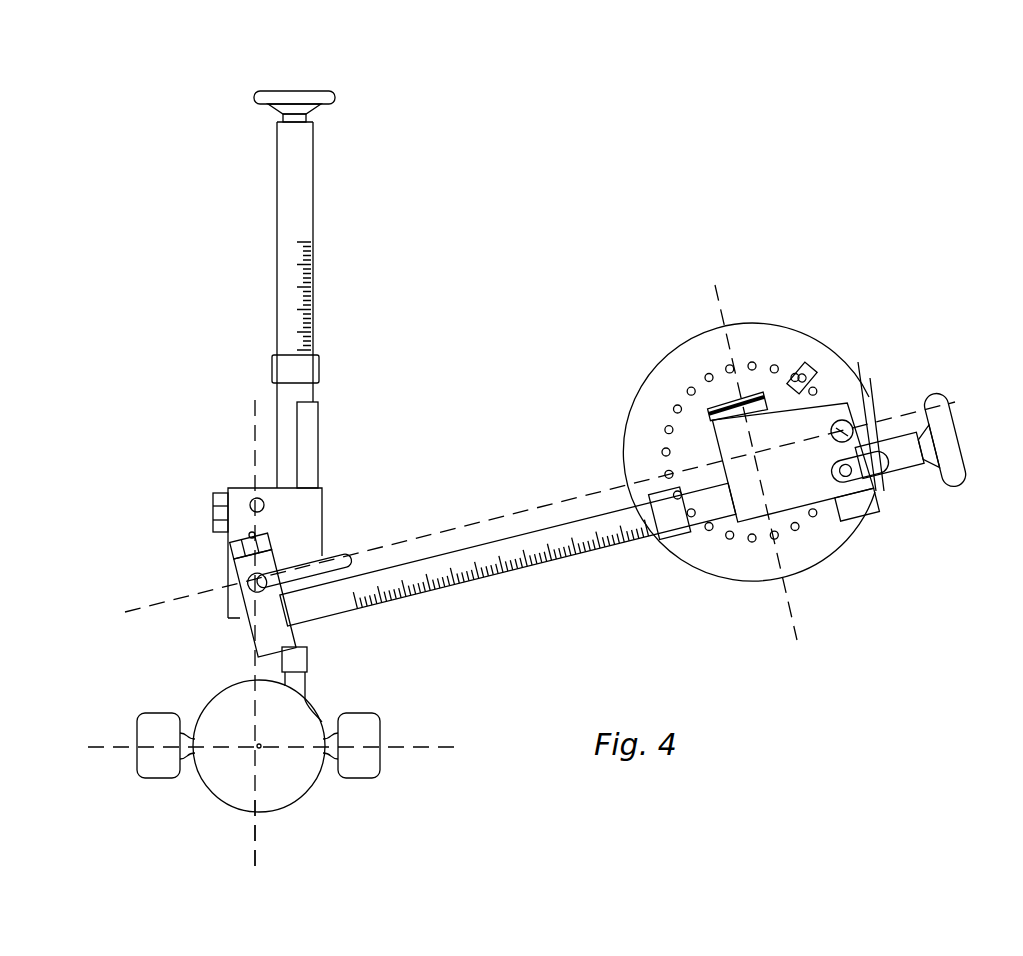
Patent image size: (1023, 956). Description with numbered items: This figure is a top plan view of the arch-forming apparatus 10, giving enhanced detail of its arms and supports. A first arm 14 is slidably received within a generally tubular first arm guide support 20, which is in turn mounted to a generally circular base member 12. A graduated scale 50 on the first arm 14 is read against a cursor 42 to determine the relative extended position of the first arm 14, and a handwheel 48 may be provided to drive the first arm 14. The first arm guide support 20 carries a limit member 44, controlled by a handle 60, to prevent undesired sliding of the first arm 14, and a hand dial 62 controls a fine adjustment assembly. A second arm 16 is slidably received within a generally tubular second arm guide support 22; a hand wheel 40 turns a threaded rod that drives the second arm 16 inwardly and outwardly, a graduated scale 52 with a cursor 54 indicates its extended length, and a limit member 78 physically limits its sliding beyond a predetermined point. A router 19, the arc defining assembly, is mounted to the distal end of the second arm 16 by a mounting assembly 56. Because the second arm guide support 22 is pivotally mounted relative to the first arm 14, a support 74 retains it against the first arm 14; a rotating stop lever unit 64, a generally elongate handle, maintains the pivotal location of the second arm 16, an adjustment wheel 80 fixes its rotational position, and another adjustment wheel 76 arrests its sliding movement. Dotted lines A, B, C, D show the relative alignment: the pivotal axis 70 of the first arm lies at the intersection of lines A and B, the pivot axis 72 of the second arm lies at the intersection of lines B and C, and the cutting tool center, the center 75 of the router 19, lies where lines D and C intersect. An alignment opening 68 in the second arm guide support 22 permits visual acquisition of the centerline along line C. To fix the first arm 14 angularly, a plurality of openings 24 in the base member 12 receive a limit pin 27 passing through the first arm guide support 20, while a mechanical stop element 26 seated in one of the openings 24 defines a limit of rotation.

The apparatus 10 is at (612, 150).
The base member 12 is at (745, 332).
The first arm 14 is at (410, 572).
The second arm 16 is at (287, 158).
The router 19 is at (232, 710).
The first arm guide support 20 is at (843, 420).
The second arm guide support 22 is at (275, 492).
The openings 24 is at (757, 544).
The mechanical stop element 26 is at (805, 368).
The limit pin 27 is at (858, 400).
The hand wheel 40 is at (287, 97).
The cursor 42 is at (668, 530).
The limit member 44 is at (870, 505).
The handwheel 48 is at (955, 426).
The graduated scale 50 is at (500, 540).
The graduated scale 52 is at (287, 270).
The cursor 54 is at (300, 372).
The mounting assembly 56 is at (306, 656).
The handle 60 is at (884, 448).
The hand dial 62 is at (730, 410).
The rotating stop lever unit 64 is at (322, 568).
The alignment opening 68 is at (255, 502).
The pivotal axis 70 is at (740, 445).
The pivot axis 72 is at (250, 576).
The support 74 is at (265, 643).
The center 75 is at (259, 747).
The adjustment wheel 76 is at (220, 513).
The limit member 78 is at (312, 420).
The adjustment wheel 80 is at (252, 534).
The broken line A is at (800, 642).
The broken line B is at (552, 500).
The broken line C is at (252, 836).
The broken line D is at (103, 742).